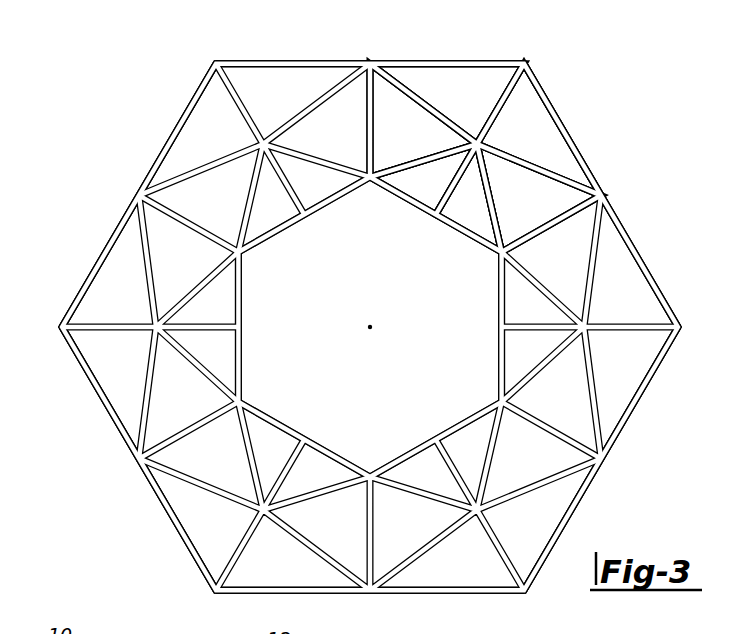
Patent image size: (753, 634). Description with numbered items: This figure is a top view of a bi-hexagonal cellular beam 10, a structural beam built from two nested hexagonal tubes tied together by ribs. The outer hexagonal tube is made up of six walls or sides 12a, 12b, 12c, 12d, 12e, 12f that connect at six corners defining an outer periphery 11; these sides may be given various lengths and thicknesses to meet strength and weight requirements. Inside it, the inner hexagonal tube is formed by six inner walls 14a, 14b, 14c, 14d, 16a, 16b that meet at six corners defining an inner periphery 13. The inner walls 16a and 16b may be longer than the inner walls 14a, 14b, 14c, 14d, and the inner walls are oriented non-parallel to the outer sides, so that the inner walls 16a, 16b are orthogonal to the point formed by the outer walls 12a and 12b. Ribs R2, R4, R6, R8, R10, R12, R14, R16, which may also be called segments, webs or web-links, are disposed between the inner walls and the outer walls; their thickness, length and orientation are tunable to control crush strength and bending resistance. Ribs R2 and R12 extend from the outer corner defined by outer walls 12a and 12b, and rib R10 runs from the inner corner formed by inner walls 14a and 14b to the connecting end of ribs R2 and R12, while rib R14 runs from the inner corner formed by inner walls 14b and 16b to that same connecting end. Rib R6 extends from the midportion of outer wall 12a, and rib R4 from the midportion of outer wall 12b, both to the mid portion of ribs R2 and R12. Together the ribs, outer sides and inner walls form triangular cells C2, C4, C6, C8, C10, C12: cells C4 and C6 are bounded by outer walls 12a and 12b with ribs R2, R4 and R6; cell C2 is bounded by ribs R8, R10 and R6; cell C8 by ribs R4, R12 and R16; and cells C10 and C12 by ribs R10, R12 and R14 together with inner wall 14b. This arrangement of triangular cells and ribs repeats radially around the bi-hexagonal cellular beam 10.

The bi-hexagonal cellular beam 10 is at (122, 50).
The outer periphery 11 is at (86, 275).
The side 12a is at (364, 60).
The side 12b is at (604, 194).
The side 12c is at (605, 460).
The side 12d is at (373, 594).
The side 12e is at (138, 459).
The side 12f is at (139, 194).
The inner periphery 13 is at (253, 250).
The inner wall 14a is at (278, 238).
The inner wall 14b is at (403, 201).
The inner wall 14c is at (438, 439).
The inner wall 14d is at (339, 452).
The inner wall 16a is at (243, 355).
The inner wall 16b is at (497, 290).
The rib R2 is at (521, 84).
The rib R4 is at (540, 160).
The rib R6 is at (427, 94).
The rib R8 is at (366, 138).
The rib R10 is at (398, 178).
The rib R12 is at (470, 168).
The rib R14 is at (490, 224).
The rib R16 is at (562, 232).
The triangular cell C2 is at (423, 120).
The triangular cell C4 is at (447, 104).
The triangular cell C6 is at (539, 130).
The triangular cell C8 is at (539, 198).
The triangular cell C10 is at (469, 198).
The triangular cell C12 is at (423, 179).